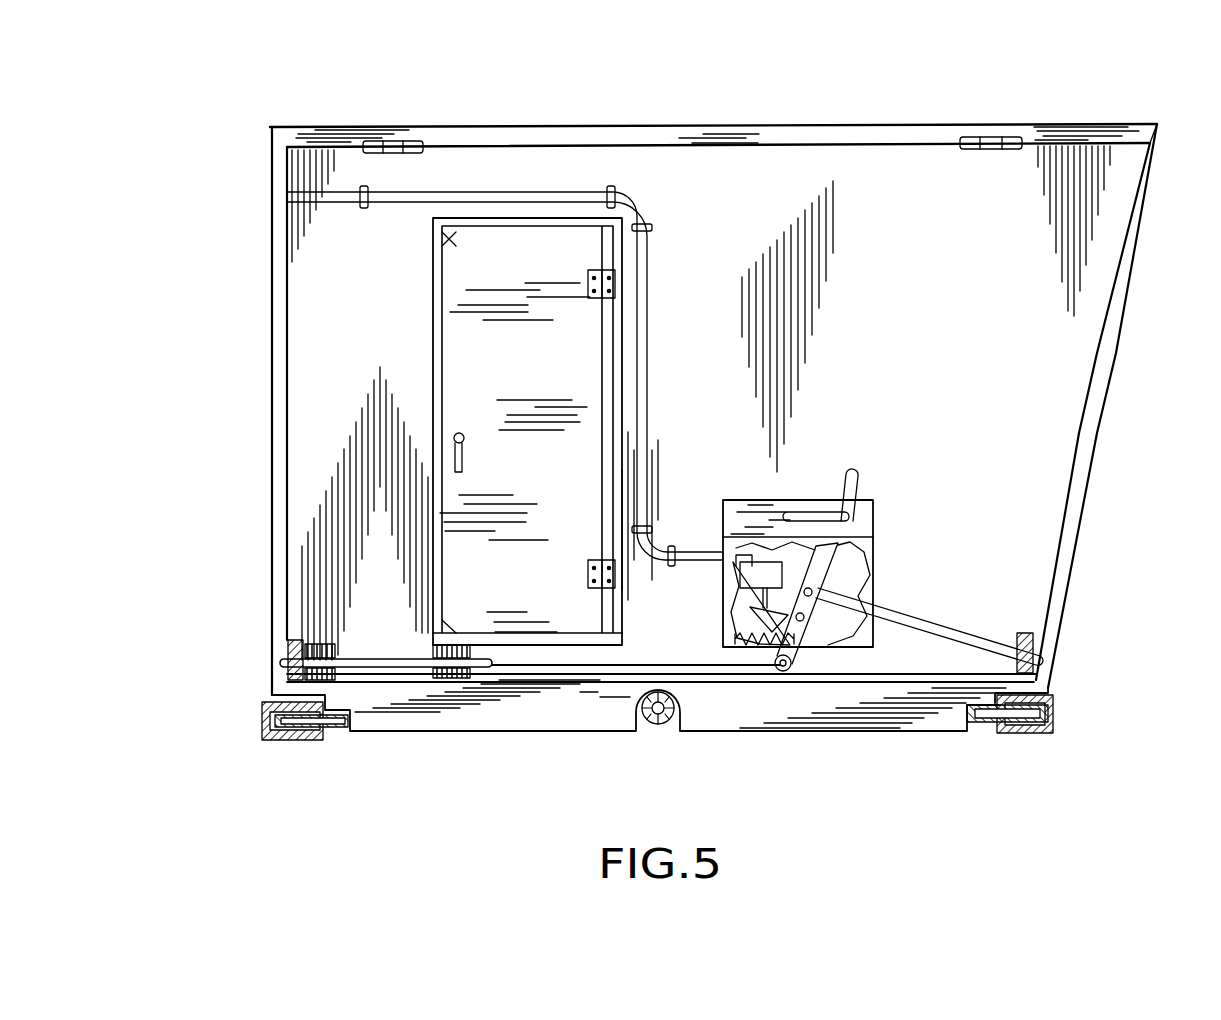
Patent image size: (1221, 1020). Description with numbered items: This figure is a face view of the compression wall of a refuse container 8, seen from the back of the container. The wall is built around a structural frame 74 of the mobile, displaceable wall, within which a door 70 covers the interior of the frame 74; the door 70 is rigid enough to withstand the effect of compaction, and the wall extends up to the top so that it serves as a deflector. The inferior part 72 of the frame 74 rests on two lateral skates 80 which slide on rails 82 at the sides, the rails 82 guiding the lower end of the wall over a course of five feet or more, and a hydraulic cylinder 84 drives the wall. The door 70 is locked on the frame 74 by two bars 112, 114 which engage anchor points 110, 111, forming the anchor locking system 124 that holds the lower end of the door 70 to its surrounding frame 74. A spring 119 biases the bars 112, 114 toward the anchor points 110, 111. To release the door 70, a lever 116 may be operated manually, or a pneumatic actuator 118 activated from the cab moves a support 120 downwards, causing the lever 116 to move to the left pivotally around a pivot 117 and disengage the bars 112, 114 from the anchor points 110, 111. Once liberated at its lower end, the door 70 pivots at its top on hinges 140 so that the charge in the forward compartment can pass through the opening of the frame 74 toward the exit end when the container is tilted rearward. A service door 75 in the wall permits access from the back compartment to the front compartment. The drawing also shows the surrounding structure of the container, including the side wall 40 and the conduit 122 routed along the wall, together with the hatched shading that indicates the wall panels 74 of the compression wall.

The cabinet 8 is at (762, 157).
The slanted wall 40 is at (1106, 346).
The door 70 is at (1068, 310).
The inferior part 72 is at (545, 717).
The frame 74 is at (438, 138).
The service door 75 is at (455, 318).
The lateral skates 80 is at (985, 722).
The rails 82 is at (1055, 715).
The hydraulic cylinder 84 is at (655, 728).
The anchor point 110 is at (1035, 637).
The anchor point 111 is at (283, 655).
The bar 112 is at (905, 618).
The bar 114 is at (492, 663).
The lever 116 is at (862, 468).
The pivot 117 is at (848, 645).
The pneumatic actuator 118 is at (752, 575).
The spring 119 is at (737, 648).
The support 120 is at (740, 637).
The conduit 122 is at (505, 197).
The anchor locking system 124 is at (862, 522).
The hinges 140 is at (988, 138).